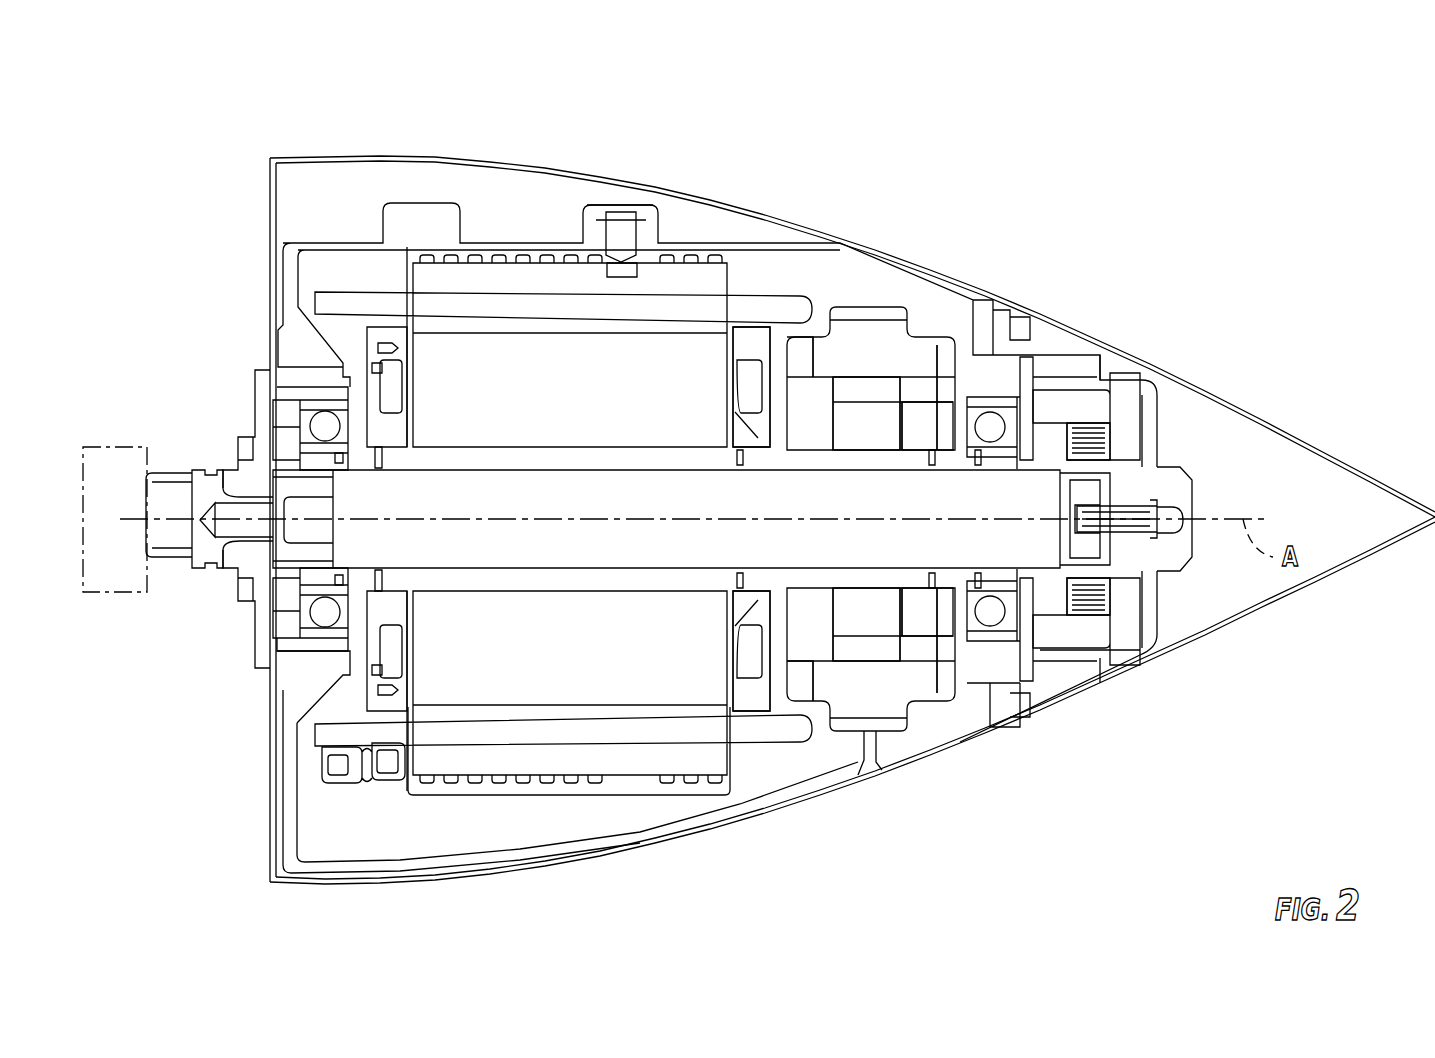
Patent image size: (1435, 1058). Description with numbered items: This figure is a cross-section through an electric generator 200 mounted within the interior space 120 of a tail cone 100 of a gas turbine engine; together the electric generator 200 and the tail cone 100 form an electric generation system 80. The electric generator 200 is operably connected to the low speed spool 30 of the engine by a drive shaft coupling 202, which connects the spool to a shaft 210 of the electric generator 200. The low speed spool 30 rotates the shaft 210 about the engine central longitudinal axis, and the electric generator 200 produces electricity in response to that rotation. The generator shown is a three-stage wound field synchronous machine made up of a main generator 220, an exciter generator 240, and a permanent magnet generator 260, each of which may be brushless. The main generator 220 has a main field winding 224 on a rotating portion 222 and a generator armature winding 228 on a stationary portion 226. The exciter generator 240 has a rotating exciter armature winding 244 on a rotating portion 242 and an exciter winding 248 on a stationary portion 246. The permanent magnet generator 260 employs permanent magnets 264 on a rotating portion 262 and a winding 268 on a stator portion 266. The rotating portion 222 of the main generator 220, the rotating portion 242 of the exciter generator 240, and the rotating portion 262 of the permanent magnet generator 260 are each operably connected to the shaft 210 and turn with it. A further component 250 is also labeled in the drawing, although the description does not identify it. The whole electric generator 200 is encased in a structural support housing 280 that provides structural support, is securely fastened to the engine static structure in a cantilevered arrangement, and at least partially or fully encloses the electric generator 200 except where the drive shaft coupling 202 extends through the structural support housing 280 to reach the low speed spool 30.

The low speed spool 30 is at (130, 445).
The electric generation system 80 is at (165, 108).
The tail cone 100 is at (1060, 322).
The interior space 120 is at (1312, 490).
The electric generator 200 is at (310, 178).
The drive shaft coupling 202 is at (200, 488).
The shaft 210 is at (1037, 548).
The main generator 220 is at (778, 899).
The rotating portion 222 is at (725, 378).
The main field winding 224 is at (507, 373).
The stationary portion 226 is at (365, 295).
The generator armature winding 228 is at (432, 273).
The exciter generator 240 is at (785, 899).
The rotating portion 242 is at (886, 403).
The rotating exciter armature winding 244 is at (870, 388).
The stationary portion 246 is at (857, 332).
The exciter winding 248 is at (806, 350).
The housing end wall 250 is at (930, 427).
The permanent magnet generator 260 is at (1022, 899).
The rotating portion 262 is at (1093, 452).
The permanent magnets 264 is at (1093, 443).
The stator portion 266 is at (1093, 390).
The winding 268 is at (1120, 403).
The structural support housing 280 is at (853, 778).